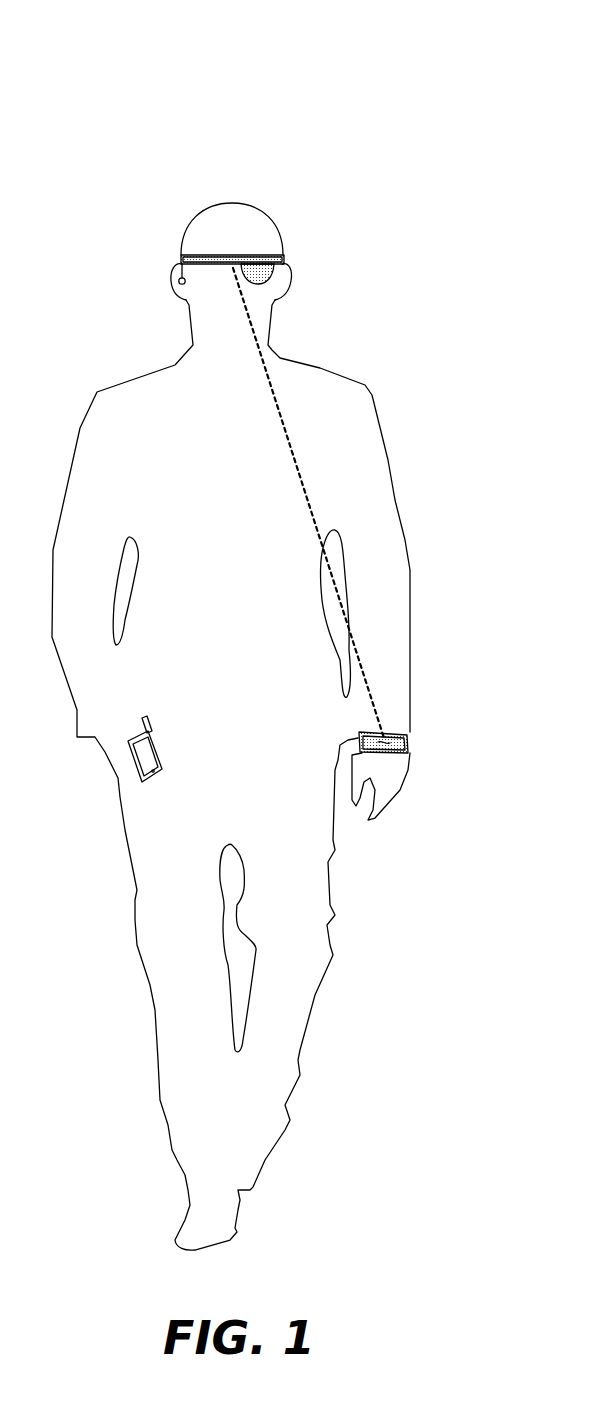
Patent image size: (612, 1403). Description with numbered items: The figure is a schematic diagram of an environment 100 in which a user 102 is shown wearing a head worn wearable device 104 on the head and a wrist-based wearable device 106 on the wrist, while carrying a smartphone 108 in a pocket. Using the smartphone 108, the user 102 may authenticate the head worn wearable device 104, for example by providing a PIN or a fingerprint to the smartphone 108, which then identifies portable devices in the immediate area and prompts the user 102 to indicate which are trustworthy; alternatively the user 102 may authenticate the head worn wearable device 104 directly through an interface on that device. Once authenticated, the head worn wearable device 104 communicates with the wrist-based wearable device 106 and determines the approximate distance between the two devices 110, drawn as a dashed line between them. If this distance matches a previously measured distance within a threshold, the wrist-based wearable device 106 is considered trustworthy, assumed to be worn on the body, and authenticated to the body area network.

The environment 100 is at (406, 54).
The user 102 is at (322, 370).
The head worn wearable device 104 is at (284, 258).
The wrist-based wearable device 106 is at (393, 733).
The smartphone 108 is at (173, 723).
The distance between the two devices 110 is at (300, 482).